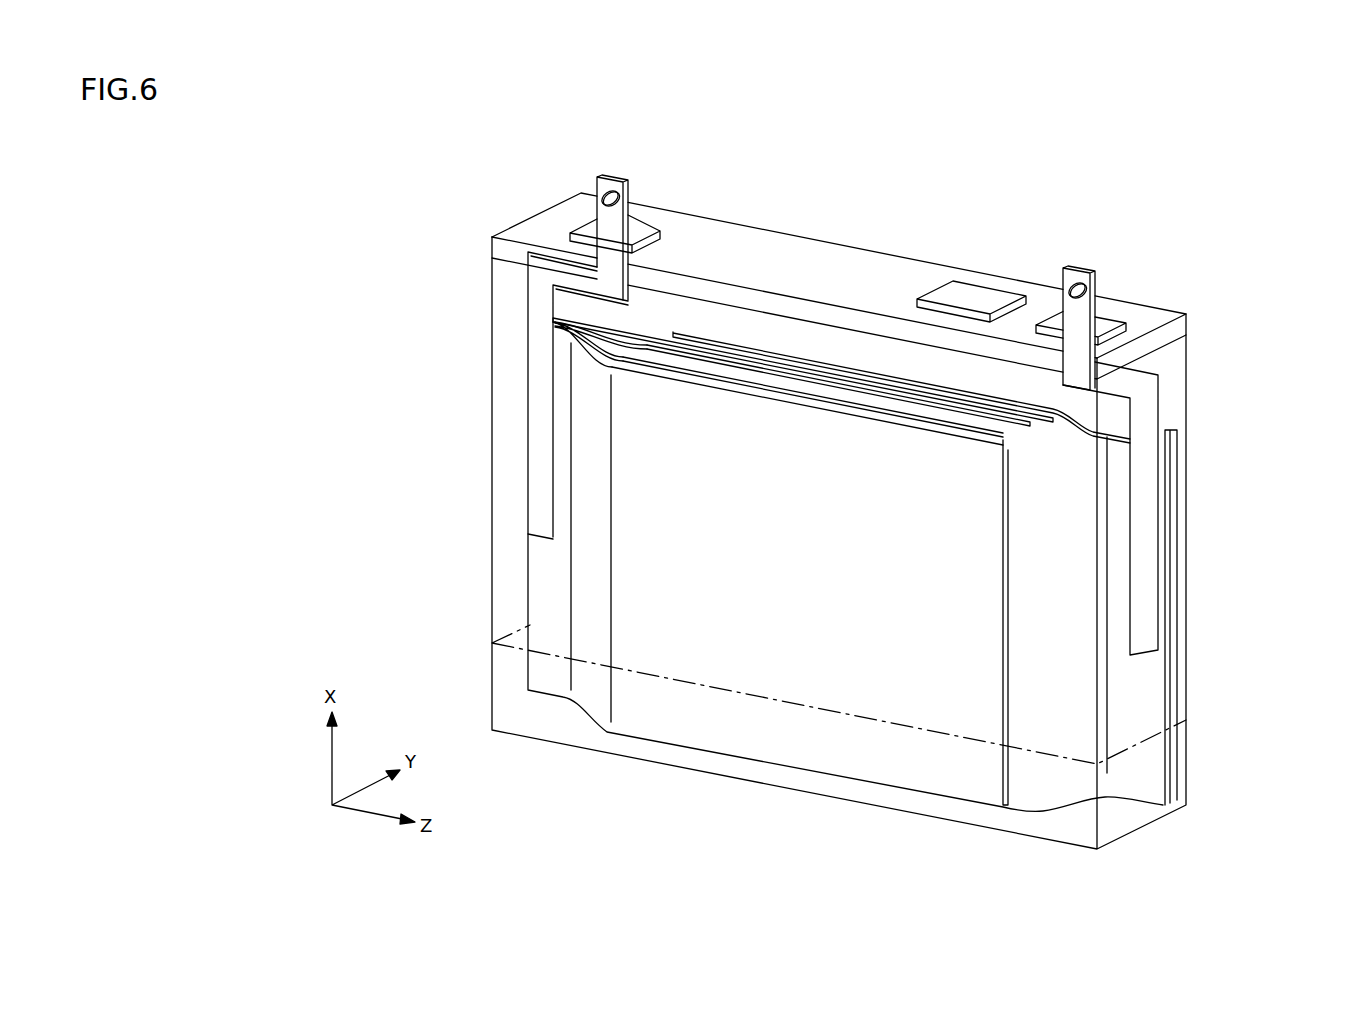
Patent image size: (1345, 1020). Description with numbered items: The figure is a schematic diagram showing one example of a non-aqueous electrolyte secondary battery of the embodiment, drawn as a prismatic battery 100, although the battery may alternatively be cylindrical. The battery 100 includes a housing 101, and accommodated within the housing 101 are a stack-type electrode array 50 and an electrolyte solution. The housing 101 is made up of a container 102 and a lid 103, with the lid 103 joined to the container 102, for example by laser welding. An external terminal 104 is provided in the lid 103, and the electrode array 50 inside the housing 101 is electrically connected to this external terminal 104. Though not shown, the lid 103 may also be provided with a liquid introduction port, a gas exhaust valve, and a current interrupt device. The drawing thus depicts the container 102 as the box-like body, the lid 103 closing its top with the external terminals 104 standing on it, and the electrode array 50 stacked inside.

The battery 100 is at (1006, 183).
The housing 101 is at (1270, 318).
The container 102 is at (1188, 366).
The lid 103 is at (1188, 323).
The external terminal 104 is at (618, 177).
The stack-type electrode array 50 is at (627, 527).